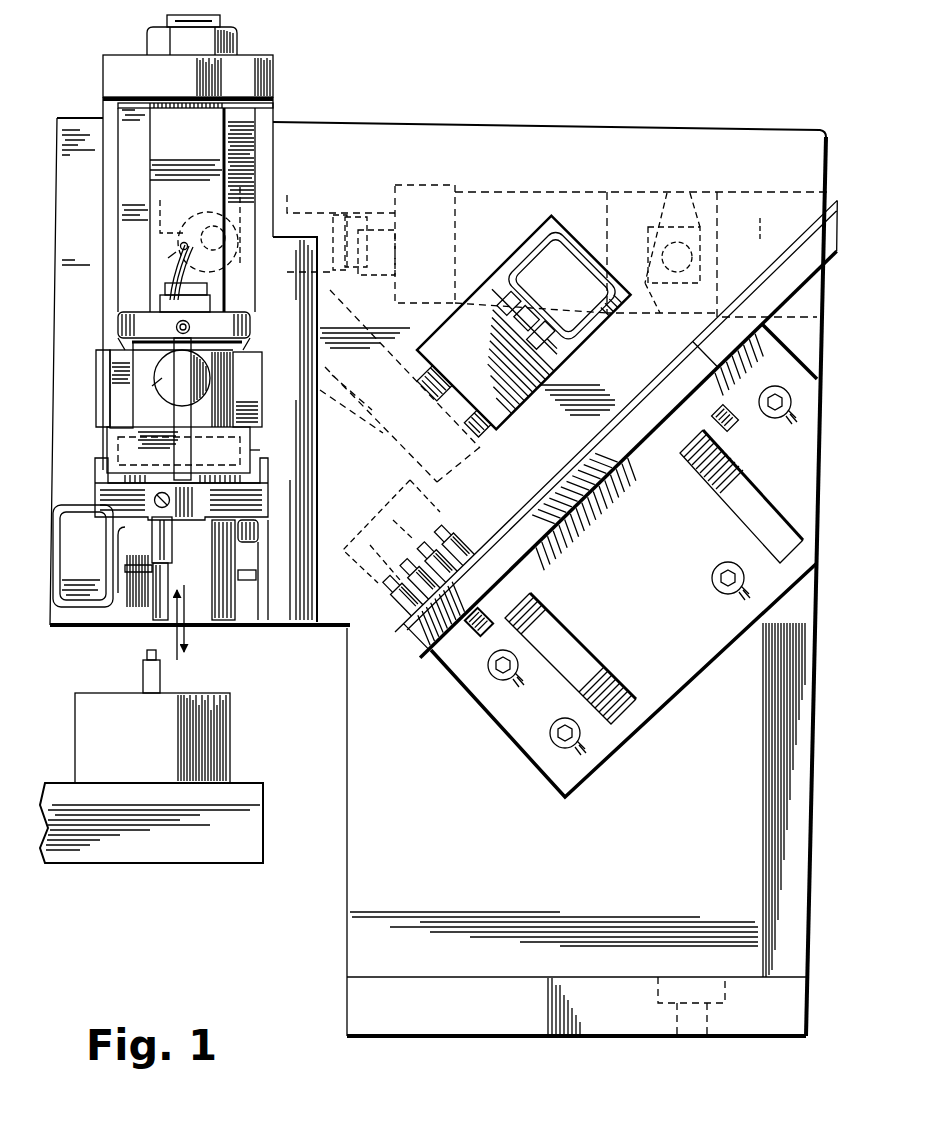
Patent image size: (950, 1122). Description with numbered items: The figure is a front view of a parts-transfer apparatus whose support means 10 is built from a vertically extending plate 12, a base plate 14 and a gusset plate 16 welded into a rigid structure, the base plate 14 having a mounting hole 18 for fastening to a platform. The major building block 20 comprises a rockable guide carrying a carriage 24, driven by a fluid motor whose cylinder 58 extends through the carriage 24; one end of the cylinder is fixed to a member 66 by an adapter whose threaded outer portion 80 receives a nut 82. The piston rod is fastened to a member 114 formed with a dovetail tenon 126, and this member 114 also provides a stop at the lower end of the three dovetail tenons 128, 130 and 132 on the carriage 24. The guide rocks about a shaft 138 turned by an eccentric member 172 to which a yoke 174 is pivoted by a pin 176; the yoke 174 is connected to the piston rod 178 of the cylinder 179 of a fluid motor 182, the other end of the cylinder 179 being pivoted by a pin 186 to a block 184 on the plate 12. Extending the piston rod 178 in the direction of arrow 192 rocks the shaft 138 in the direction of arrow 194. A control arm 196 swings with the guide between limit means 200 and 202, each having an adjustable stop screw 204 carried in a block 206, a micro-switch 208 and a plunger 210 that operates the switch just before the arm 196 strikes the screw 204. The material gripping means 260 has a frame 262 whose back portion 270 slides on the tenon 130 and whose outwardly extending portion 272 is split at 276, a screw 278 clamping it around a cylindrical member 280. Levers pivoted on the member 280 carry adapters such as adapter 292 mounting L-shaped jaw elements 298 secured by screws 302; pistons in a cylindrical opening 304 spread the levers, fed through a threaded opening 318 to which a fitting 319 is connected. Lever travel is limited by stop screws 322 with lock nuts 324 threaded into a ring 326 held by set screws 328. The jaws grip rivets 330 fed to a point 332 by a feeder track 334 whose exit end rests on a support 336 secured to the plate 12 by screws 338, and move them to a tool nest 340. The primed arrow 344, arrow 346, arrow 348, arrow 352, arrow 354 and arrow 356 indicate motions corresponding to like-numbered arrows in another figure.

The support means 10 is at (322, 947).
The vertically extending plate 12 is at (444, 855).
The base plate 14 is at (488, 1010).
The gusset plate 16 is at (785, 826).
The mounting hole 18 is at (660, 1003).
The major building block 20 is at (234, 335).
The carriage 24 is at (242, 146).
The cylinder 58 is at (176, 100).
The member 66 is at (235, 70).
The outer portion 80 is at (178, 21).
The nut 82 is at (221, 36).
The member 114 is at (255, 480).
The dovetail tenon 126 is at (105, 500).
The dovetail tenon 128 is at (110, 122).
The dovetail tenon 130 is at (195, 133).
The dovetail tenon 132 is at (262, 170).
The shaft 138 is at (110, 355).
The eccentric member 172 is at (168, 258).
The yoke 174 is at (300, 200).
The pin 176 is at (226, 232).
The piston rod 178 is at (370, 265).
The cylinder 179 is at (590, 193).
The fluid motor 182 is at (550, 188).
The block 184 is at (760, 218).
The pin 186 is at (680, 243).
The arrow 192 is at (348, 212).
The arrow 194 is at (128, 246).
The control arm 196 is at (480, 448).
The limit means 200 is at (485, 274).
The limit means 202 is at (215, 628).
The adjustable stop screw 204 is at (258, 528).
The block 206 is at (219, 577).
The micro-switch 208 is at (94, 550).
The plunger 210 is at (256, 570).
The material gripping means 260 is at (92, 418).
The frame 262 is at (255, 392).
The back portion 270 is at (110, 384).
The outwardly extending portion 272 is at (245, 455).
The split 276 is at (175, 428).
The screw 278 is at (110, 445).
The cylindrical member 280 is at (213, 382).
The adapter 292 is at (138, 518).
The jaw element 298 is at (172, 550).
The screw 302 is at (170, 500).
The cylindrical opening 304 is at (152, 386).
The threaded opening 318 is at (200, 302).
The fitting 319 is at (186, 240).
The adjustable stop screw 322 is at (135, 352).
The lock nut 324 is at (183, 326).
The ring 326 is at (250, 323).
The set screw 328 is at (122, 322).
The rivet 330 is at (152, 678).
The point 332 is at (385, 618).
The feeder track 334 is at (528, 496).
The support 336 is at (624, 560).
The screw 338 is at (776, 418).
The tool nest 340 is at (144, 756).
The arrow 344 is at (159, 622).
The arrow 346 is at (335, 553).
The arrow 348 is at (372, 543).
The arrow 352 is at (320, 570).
The arrow 354 is at (270, 600).
The arrow 356 is at (192, 610).